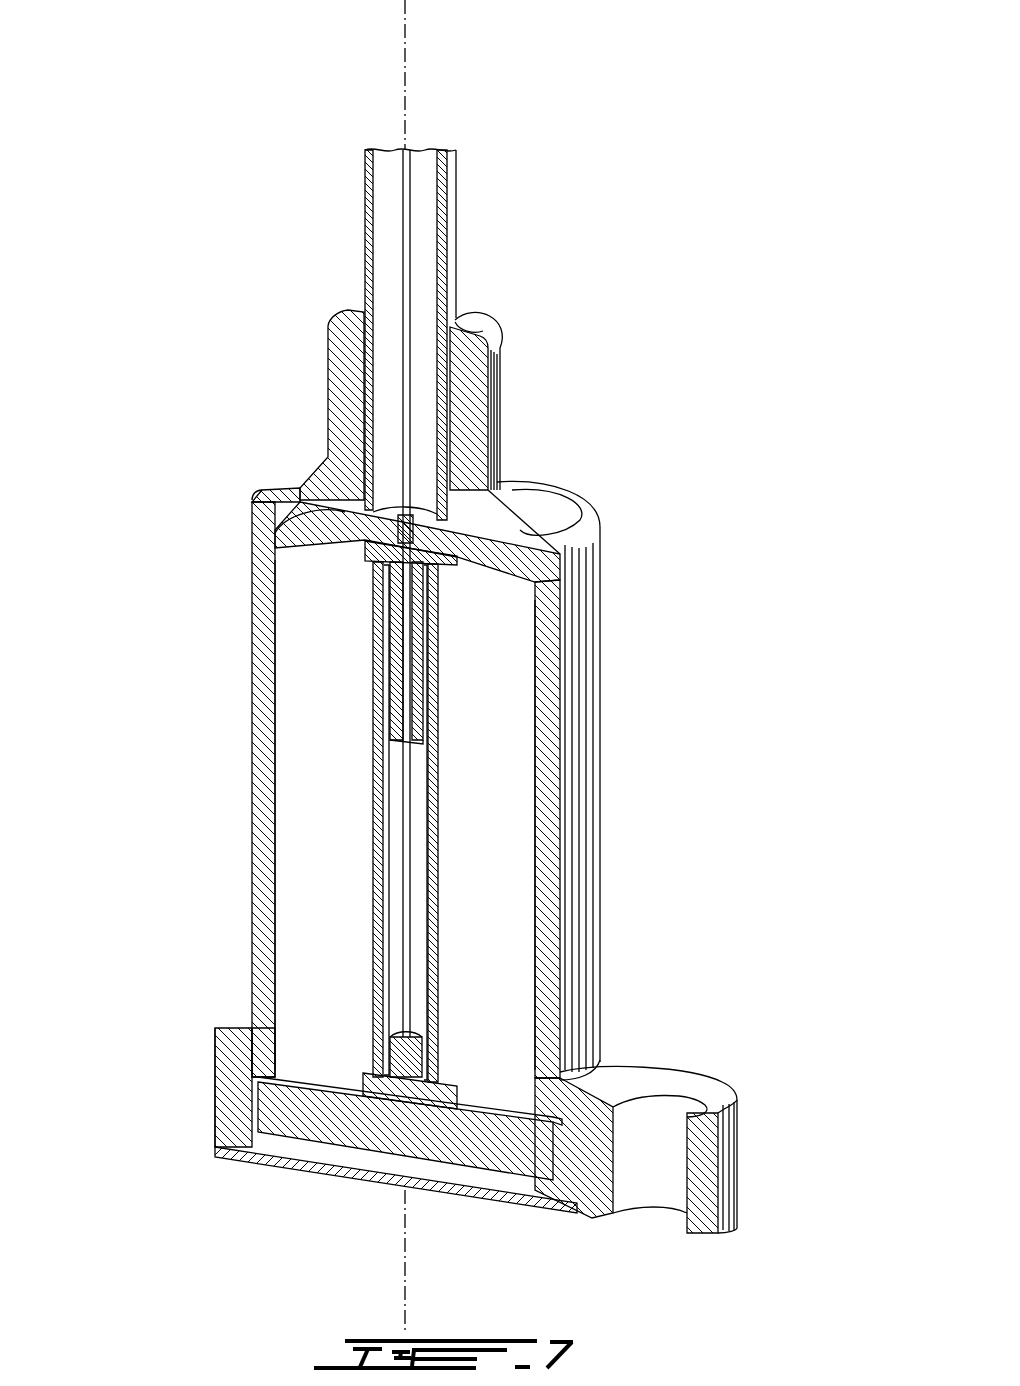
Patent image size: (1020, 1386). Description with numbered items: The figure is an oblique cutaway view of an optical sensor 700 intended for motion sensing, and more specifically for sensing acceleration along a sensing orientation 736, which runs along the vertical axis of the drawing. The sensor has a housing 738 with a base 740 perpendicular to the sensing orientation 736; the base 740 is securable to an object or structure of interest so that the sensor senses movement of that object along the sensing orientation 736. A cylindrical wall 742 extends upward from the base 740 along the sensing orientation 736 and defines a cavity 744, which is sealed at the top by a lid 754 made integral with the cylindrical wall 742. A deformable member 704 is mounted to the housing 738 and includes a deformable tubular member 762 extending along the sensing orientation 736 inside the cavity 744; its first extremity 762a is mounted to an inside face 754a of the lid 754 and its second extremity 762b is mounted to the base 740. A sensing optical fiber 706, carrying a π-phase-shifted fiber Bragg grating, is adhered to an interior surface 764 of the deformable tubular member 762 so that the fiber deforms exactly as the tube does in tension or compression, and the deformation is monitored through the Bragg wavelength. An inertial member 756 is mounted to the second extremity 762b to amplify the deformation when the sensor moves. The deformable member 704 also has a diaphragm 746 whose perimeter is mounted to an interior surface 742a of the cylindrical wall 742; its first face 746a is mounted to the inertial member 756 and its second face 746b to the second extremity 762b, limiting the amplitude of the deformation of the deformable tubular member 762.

The optical sensor 700 is at (213, 190).
The deformable member 704 is at (440, 888).
The sensing optical fiber 706 is at (418, 832).
The sensing orientation 736 is at (408, 1262).
The housing 738 is at (590, 526).
The base 740 is at (240, 1025).
The cylindrical wall 742 is at (548, 973).
The interior surface of the cylindrical wall 742a is at (285, 980).
The cavity 744 is at (500, 1003).
The diaphragm 746 is at (562, 1075).
The first face of the diaphragm 746a is at (310, 1085).
The second face of the diaphragm 746b is at (268, 1082).
The lid 754 is at (480, 545).
The inside face of the lid 754a is at (325, 522).
The inertial member 756 is at (527, 1150).
The deformable tubular member 762 is at (412, 938).
The first extremity of the deformable tubular member 762a is at (423, 606).
The second extremity of the deformable tubular member 762b is at (500, 1100).
The interior surface of the deformable tubular member 764 is at (403, 773).